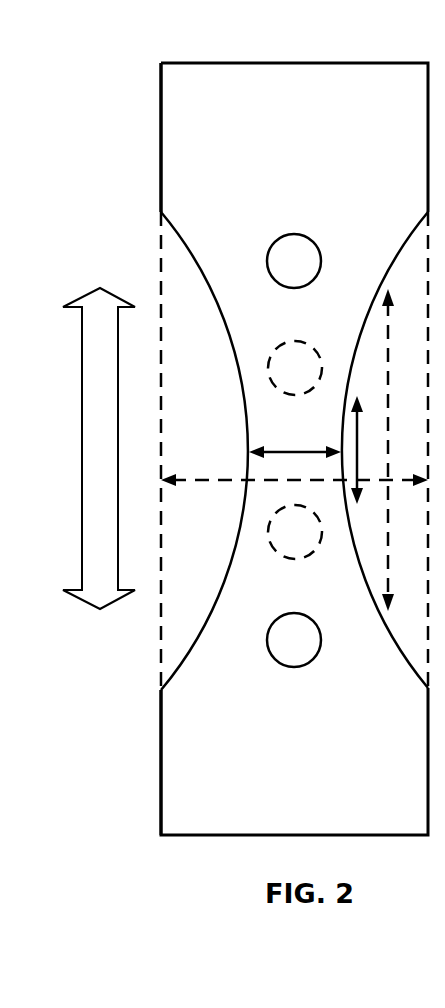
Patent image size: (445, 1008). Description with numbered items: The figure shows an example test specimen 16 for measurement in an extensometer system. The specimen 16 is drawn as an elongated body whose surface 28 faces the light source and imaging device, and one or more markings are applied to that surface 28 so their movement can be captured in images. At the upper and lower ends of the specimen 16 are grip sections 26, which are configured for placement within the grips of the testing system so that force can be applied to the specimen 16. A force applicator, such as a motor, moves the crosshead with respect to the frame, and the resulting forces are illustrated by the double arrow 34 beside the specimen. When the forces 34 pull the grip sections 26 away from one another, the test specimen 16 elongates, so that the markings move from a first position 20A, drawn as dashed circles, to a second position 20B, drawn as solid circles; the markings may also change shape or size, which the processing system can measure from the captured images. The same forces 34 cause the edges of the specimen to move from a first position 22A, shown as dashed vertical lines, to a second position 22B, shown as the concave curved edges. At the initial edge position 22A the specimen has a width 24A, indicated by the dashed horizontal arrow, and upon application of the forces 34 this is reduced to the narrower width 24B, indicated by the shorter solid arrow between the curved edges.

The test specimen 16 is at (375, 63).
The surface 28 is at (301, 133).
The grip sections 26 is at (161, 122).
The first position of the edges 22A is at (161, 255).
The second position of the edges 22B is at (241, 365).
The second position of the markings 20B is at (280, 235).
The first position of the markings 20A is at (297, 341).
The width 24A is at (185, 478).
The reduced width 24B is at (273, 450).
The double arrow / forces 34 is at (110, 459).